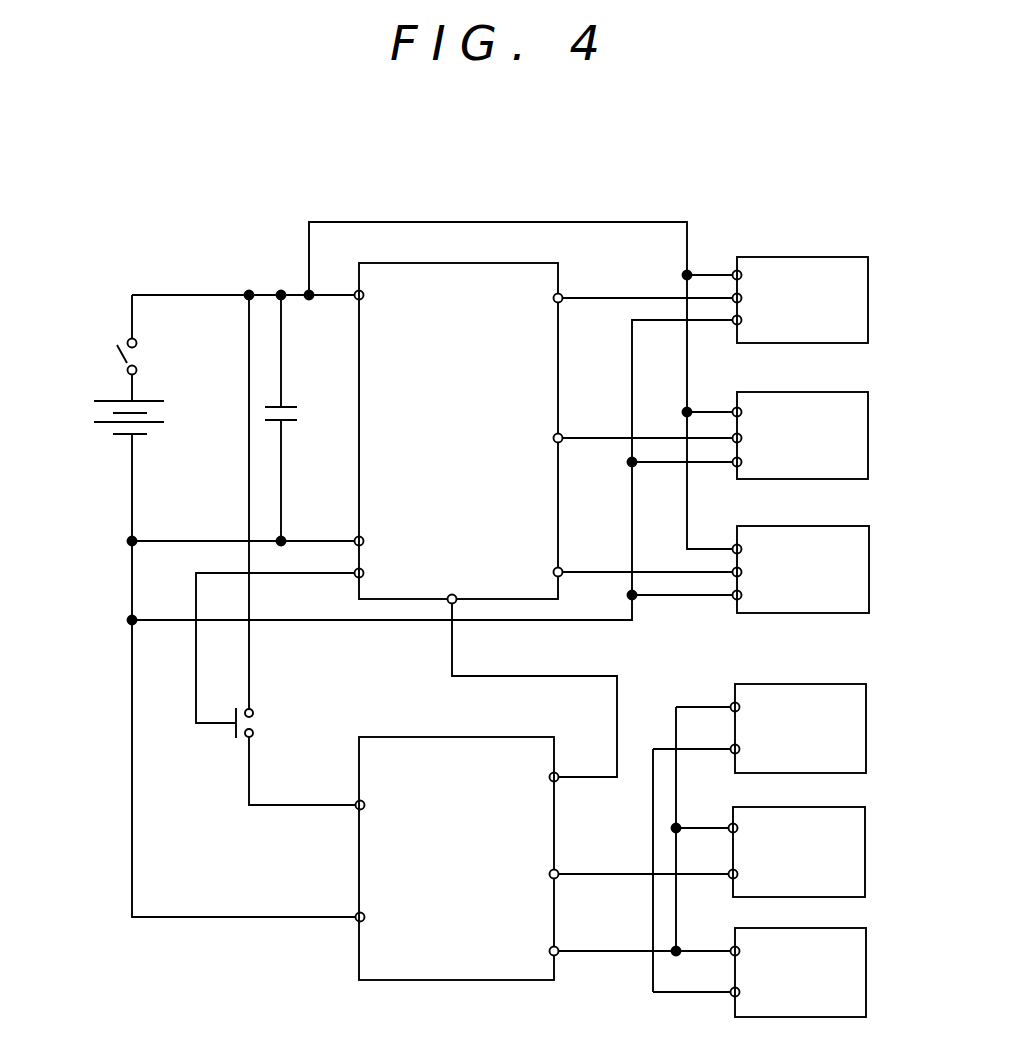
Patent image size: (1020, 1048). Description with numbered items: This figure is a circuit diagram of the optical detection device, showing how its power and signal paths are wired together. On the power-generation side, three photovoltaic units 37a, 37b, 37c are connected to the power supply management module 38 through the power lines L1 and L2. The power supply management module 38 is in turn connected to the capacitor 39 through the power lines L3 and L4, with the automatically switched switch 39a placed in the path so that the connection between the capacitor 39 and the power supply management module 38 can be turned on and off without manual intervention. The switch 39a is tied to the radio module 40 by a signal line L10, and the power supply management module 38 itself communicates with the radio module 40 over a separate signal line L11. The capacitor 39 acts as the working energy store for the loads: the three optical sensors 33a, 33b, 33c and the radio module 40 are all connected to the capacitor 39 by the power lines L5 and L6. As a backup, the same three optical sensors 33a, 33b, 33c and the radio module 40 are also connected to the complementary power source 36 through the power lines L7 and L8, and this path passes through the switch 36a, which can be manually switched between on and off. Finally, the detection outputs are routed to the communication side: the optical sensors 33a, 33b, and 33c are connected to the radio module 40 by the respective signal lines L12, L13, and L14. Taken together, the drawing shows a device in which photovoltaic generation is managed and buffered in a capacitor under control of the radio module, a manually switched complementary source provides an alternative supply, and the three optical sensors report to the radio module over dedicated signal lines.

The complementary power source 36 is at (110, 457).
The switch 36a is at (104, 343).
The capacitor 39 is at (301, 420).
The switch 39a is at (275, 517).
The radio module 40 is at (458, 415).
The power supply management module 38 is at (456, 877).
The optical sensor 33a is at (831, 300).
The optical sensor 33b is at (831, 435).
The optical sensor 33c is at (830, 569).
The photovoltaic unit 37a is at (830, 728).
The photovoltaic unit 37b is at (829, 852).
The photovoltaic unit 37c is at (829, 972).
The power line L1 is at (645, 871).
The power line L2 is at (645, 829).
The power line L3 is at (307, 788).
The power line L4 is at (246, 785).
The power line L5 is at (525, 372).
The power line L6 is at (437, 486).
The power line L7 is at (228, 310).
The power line L8 is at (228, 541).
The signal line L10 is at (280, 646).
The signal line L11 is at (533, 688).
The signal line L12 is at (648, 284).
The signal line L13 is at (648, 423).
The signal line L14 is at (648, 558).